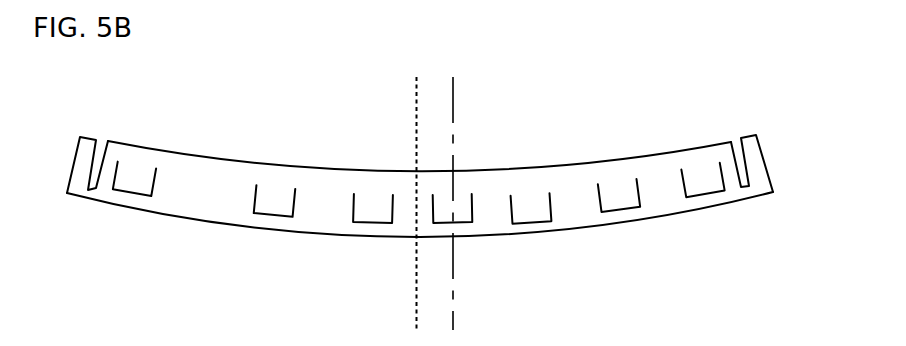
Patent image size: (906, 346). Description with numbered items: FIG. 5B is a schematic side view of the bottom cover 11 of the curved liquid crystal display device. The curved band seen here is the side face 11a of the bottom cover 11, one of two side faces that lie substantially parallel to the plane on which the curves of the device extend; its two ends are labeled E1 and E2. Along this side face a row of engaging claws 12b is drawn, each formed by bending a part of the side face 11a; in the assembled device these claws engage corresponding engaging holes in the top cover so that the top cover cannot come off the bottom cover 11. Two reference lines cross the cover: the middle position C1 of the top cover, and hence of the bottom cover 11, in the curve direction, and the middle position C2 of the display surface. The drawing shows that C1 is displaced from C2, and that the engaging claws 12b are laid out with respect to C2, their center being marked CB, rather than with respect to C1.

The bottom cover 11 is at (420, 170).
The side face of the bottom cover 11a is at (556, 172).
The engaging claw 12b is at (257, 197).
The center of electrode array CB is at (481, 153).
The middle position of the top cover C1 is at (416, 272).
The middle position of the display surface C2 is at (454, 272).
The first end of substrate E1 is at (677, 120).
The second end of substrate E2 is at (106, 194).